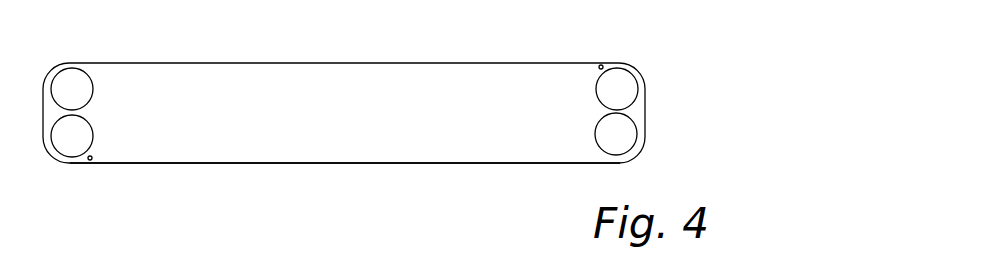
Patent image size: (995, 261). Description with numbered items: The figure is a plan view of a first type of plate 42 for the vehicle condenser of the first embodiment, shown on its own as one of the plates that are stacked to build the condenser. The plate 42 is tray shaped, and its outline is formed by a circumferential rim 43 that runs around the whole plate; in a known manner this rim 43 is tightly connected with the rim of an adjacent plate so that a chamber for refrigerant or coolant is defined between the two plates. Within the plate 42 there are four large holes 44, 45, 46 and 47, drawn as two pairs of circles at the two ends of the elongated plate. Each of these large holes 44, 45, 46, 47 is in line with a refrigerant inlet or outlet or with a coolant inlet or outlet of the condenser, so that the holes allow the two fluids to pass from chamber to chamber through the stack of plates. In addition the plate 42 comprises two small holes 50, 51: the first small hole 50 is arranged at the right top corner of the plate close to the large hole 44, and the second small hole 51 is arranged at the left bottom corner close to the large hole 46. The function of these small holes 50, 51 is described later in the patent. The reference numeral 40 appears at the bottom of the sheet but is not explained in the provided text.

The belt assembly 40 is at (432, 257).
The plate 42 is at (647, 113).
The circumferential rim 43 is at (487, 163).
The large hole 44 is at (627, 82).
The large hole 45 is at (627, 135).
The large hole 46 is at (72, 146).
The large hole 47 is at (76, 84).
The small hole 50 is at (600, 66).
The small hole 51 is at (92, 163).